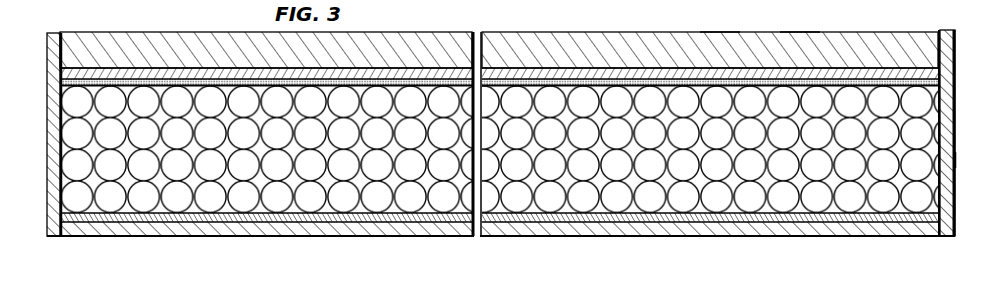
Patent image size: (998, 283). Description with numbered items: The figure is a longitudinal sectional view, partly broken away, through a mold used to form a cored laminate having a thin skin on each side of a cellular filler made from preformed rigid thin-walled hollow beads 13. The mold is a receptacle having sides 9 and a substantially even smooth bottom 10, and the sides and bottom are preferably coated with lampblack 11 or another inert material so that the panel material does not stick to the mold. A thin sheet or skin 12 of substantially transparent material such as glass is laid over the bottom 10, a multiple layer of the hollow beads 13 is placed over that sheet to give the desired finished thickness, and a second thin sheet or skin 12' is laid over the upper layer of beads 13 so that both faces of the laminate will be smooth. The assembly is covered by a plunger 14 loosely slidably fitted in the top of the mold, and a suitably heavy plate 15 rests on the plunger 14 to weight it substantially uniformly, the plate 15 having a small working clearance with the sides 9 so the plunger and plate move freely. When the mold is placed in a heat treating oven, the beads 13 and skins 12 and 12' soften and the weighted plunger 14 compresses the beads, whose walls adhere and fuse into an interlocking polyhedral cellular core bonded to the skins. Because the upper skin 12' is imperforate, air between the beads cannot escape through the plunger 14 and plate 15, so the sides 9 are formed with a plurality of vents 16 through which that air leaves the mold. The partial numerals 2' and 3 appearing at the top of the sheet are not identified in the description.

The panel 2' is at (800, 16).
The panel 3 is at (720, 16).
The sides 9 is at (48, 92).
The bottom 10 is at (249, 236).
The lampblack 11 is at (940, 108).
The thin sheet or skin 12 is at (499, 237).
The thin sheet or skin 12' is at (527, 79).
The rigid thin-walled hollow beads 13 is at (77, 142).
The plunger 14 is at (68, 73).
The heavy plate 15 is at (882, 50).
The vents 16 is at (973, 161).